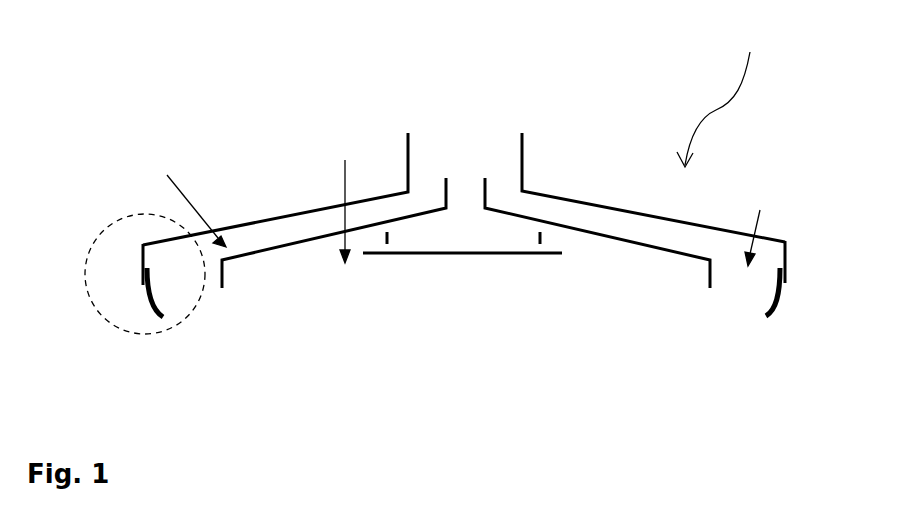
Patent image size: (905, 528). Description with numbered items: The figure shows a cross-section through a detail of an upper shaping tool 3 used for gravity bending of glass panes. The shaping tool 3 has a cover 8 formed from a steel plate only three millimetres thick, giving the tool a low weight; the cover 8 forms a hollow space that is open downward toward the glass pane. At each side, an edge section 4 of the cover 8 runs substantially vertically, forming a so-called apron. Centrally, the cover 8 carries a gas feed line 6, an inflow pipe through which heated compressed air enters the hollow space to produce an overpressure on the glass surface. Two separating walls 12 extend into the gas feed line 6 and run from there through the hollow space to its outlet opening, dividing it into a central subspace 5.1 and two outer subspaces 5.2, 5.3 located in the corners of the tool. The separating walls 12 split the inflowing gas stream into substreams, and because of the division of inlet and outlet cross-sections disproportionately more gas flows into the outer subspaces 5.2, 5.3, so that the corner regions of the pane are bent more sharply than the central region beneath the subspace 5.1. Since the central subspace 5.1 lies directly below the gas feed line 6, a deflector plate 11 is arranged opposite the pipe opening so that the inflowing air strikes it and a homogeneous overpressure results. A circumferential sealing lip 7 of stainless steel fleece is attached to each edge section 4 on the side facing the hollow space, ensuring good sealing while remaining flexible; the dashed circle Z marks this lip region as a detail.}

The shaping tool 3 is at (717, 91).
The edge section 4 is at (142, 263).
The central subspace 5.1 is at (348, 200).
The outer subspace 5.2 is at (181, 197).
The outer subspace 5.3 is at (758, 221).
The gas feed line 6 is at (508, 167).
The sealing lip 7 is at (162, 313).
The cover 8 is at (318, 208).
The deflector plate 11 is at (540, 255).
The separating walls 12 is at (277, 248).
The detail region Z is at (195, 310).